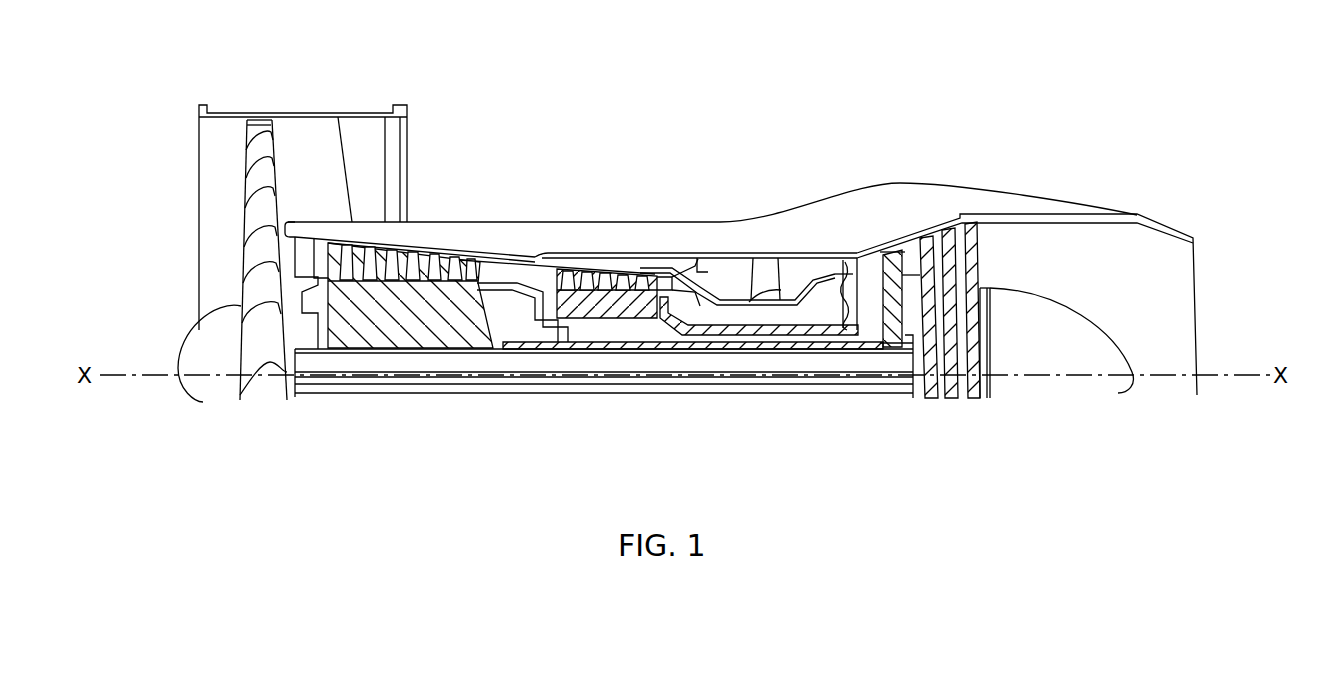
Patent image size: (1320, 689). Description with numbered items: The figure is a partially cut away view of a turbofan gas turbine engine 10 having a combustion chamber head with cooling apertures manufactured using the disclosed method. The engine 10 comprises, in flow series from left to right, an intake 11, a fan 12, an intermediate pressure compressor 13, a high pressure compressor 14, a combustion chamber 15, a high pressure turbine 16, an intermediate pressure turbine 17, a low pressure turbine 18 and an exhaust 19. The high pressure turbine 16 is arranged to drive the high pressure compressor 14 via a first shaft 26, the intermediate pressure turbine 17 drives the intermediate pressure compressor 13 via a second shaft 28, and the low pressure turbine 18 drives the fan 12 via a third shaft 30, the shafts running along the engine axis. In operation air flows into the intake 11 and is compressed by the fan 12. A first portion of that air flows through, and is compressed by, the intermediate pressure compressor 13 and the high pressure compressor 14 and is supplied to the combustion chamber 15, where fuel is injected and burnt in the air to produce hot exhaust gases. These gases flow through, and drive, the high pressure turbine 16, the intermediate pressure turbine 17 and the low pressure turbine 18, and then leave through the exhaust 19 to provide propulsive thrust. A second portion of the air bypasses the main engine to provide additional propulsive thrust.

The turbofan gas turbine engine 10 is at (576, 144).
The intake 11 is at (178, 241).
The fan 12 is at (268, 143).
The intermediate pressure compressor 13 is at (410, 290).
The high pressure compressor 14 is at (612, 275).
The combustion chamber 15 is at (768, 249).
The high pressure turbine 16 is at (845, 262).
The intermediate pressure turbine 17 is at (893, 255).
The low pressure turbine 18 is at (955, 252).
The exhaust 19 is at (1182, 318).
The first shaft 26 is at (832, 332).
The second shaft 28 is at (556, 352).
The third shaft 30 is at (443, 395).